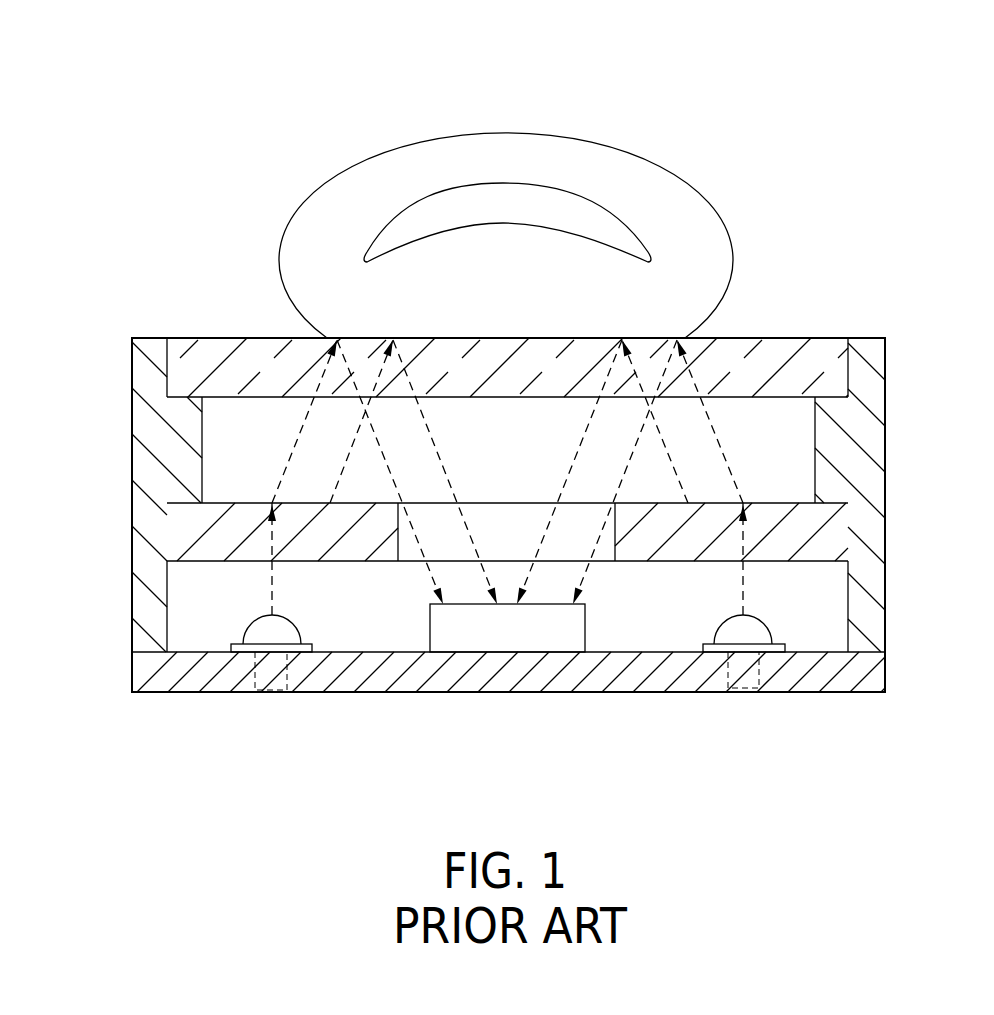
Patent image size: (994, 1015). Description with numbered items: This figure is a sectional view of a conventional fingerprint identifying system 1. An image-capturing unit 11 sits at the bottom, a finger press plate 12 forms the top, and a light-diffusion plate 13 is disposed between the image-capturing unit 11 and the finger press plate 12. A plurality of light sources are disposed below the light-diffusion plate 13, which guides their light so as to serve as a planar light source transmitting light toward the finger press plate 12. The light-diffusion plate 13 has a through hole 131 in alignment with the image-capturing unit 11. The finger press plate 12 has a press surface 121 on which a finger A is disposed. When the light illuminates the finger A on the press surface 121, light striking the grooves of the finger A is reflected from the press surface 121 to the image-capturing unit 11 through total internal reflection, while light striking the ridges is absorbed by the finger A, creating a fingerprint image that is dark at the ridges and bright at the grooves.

The fingerprint identifying system 1 is at (118, 361).
The finger press plate 12 is at (782, 352).
The press surface 121 is at (218, 338).
The light-diffusion plate 13 is at (795, 540).
The through hole 131 is at (615, 523).
The image-capturing unit 11 is at (500, 637).
The finger A is at (507, 133).